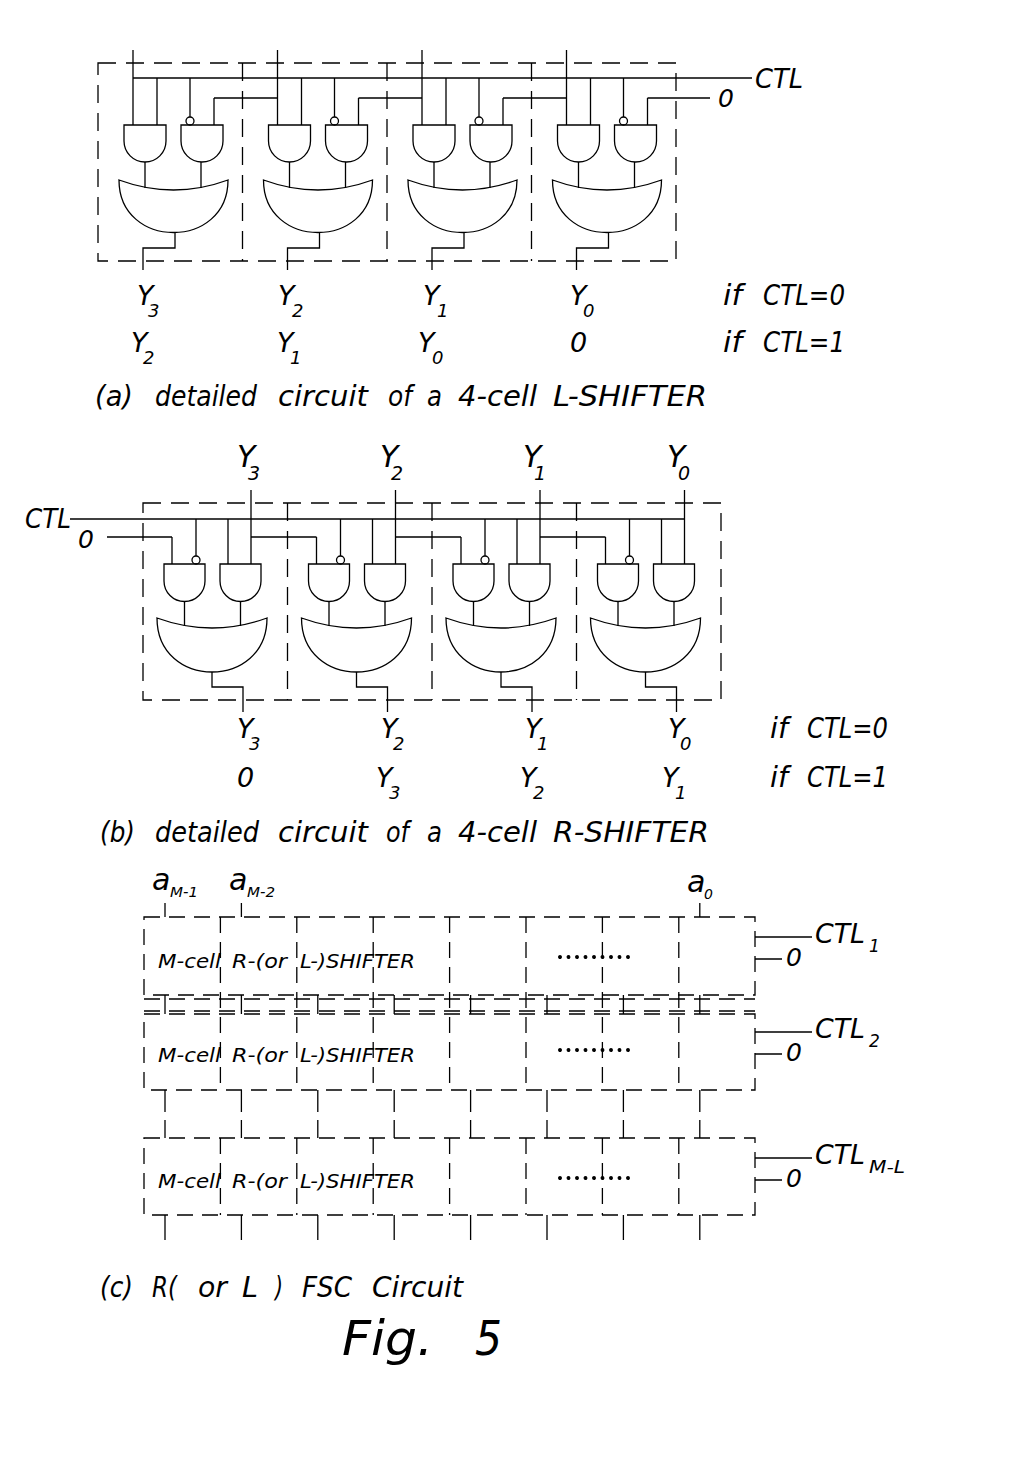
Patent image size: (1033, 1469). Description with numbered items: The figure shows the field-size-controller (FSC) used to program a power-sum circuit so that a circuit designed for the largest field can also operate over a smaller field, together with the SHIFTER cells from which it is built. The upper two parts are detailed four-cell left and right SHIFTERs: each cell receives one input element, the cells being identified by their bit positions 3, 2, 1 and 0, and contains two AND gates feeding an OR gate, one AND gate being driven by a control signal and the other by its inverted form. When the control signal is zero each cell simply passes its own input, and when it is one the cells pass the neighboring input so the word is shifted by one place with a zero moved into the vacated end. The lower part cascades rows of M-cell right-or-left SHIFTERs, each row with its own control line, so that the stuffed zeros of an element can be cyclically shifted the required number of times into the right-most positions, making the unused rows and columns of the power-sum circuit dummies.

The shifter cell for input Y3 3 is at (173, 136).
The shifter cell for input Y2 2 is at (318, 136).
The shifter cell for input Y1 1 is at (462, 136).
The shifter cell for input Y0 0 is at (607, 136).